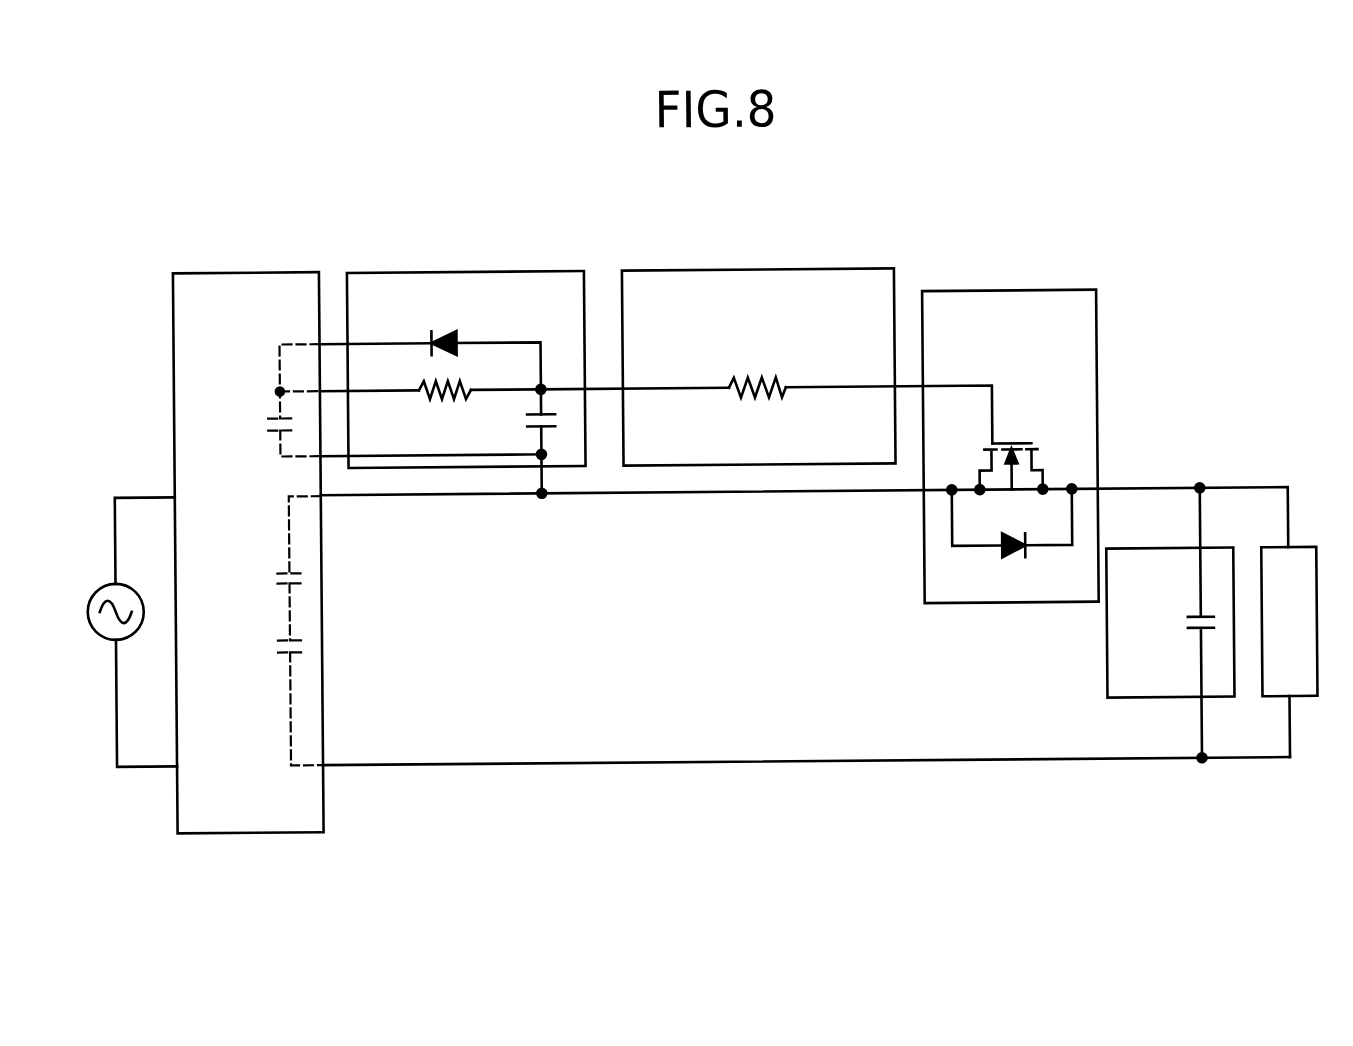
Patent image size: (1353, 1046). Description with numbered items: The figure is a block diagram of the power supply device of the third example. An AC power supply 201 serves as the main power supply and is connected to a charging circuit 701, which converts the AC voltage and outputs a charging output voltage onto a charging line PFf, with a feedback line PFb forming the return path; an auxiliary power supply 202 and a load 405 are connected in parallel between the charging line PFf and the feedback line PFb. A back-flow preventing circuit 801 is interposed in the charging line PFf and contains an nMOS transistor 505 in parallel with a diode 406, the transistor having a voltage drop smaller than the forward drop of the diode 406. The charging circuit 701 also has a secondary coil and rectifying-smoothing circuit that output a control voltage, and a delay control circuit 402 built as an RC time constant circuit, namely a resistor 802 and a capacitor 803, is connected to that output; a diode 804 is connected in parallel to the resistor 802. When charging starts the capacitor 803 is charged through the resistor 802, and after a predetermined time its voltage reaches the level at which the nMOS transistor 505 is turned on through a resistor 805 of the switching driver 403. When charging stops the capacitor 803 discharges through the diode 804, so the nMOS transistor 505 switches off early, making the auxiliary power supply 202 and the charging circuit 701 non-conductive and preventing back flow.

The charging circuit 701 is at (245, 269).
The delay control circuit 402 is at (523, 351).
The switching driver 403 is at (806, 336).
The back-flow preventing circuit 801 is at (1010, 416).
The resistor 805 is at (751, 378).
The diode 804 is at (462, 345).
The resistor 802 is at (422, 397).
The capacitor 803 is at (528, 422).
The nMOS transistor 505 is at (1018, 443).
The diode 406 is at (1006, 556).
The AC power supply 201 is at (130, 584).
The auxiliary power supply 202 is at (1224, 552).
The load 405 is at (1305, 552).
The charging line PFf is at (1164, 491).
The feedback line PFb is at (1163, 763).